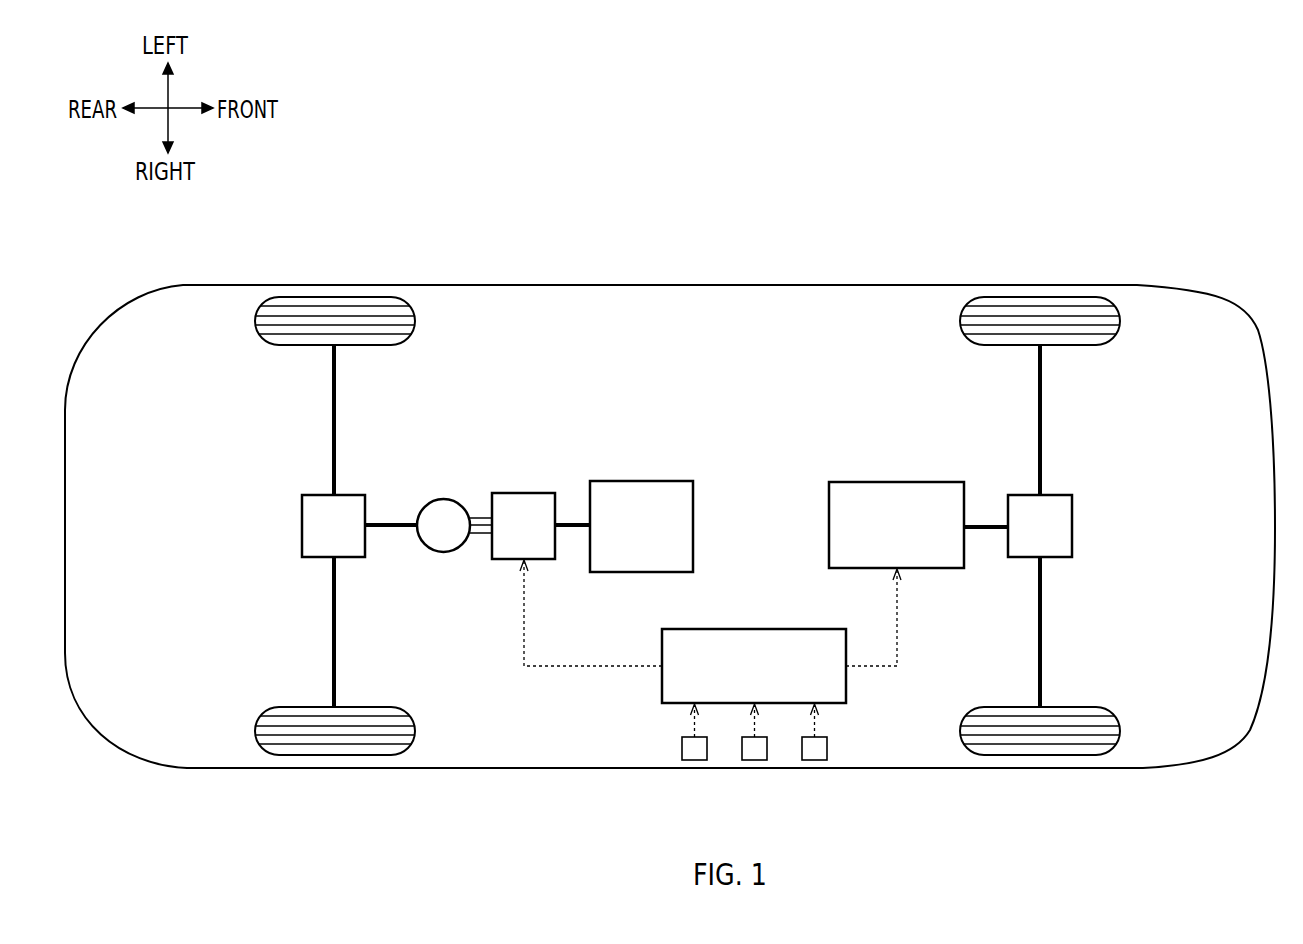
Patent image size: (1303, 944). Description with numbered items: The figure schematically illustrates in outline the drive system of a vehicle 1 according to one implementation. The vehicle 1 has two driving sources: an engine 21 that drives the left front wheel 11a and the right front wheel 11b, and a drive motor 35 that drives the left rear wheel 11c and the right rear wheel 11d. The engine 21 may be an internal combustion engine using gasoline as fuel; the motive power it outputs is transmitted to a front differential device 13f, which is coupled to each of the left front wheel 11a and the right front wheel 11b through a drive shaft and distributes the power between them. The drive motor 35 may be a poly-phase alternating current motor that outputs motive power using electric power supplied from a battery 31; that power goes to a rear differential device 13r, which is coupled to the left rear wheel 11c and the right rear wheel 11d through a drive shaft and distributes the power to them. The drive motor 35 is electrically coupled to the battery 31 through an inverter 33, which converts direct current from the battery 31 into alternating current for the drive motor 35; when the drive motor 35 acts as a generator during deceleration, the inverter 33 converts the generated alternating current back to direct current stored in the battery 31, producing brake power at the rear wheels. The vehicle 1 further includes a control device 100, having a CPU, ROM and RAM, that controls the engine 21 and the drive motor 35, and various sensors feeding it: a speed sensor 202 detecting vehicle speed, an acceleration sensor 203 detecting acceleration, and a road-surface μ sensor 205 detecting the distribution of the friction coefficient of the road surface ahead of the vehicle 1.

The vehicle 1 is at (1075, 92).
The left front wheel 11a is at (1030, 297).
The right front wheel 11b is at (1040, 755).
The left rear wheel 11c is at (330, 297).
The right rear wheel 11d is at (337, 755).
The front differential device 13f is at (1020, 500).
The rear differential device 13r is at (355, 508).
The engine 21 is at (872, 497).
The battery 31 is at (641, 490).
The inverter 33 is at (524, 503).
The drive motor 35 is at (445, 507).
The control device 100 is at (840, 683).
The speed sensor 202 is at (697, 760).
The acceleration sensor 203 is at (757, 760).
The road-surface μ sensor 205 is at (817, 760).